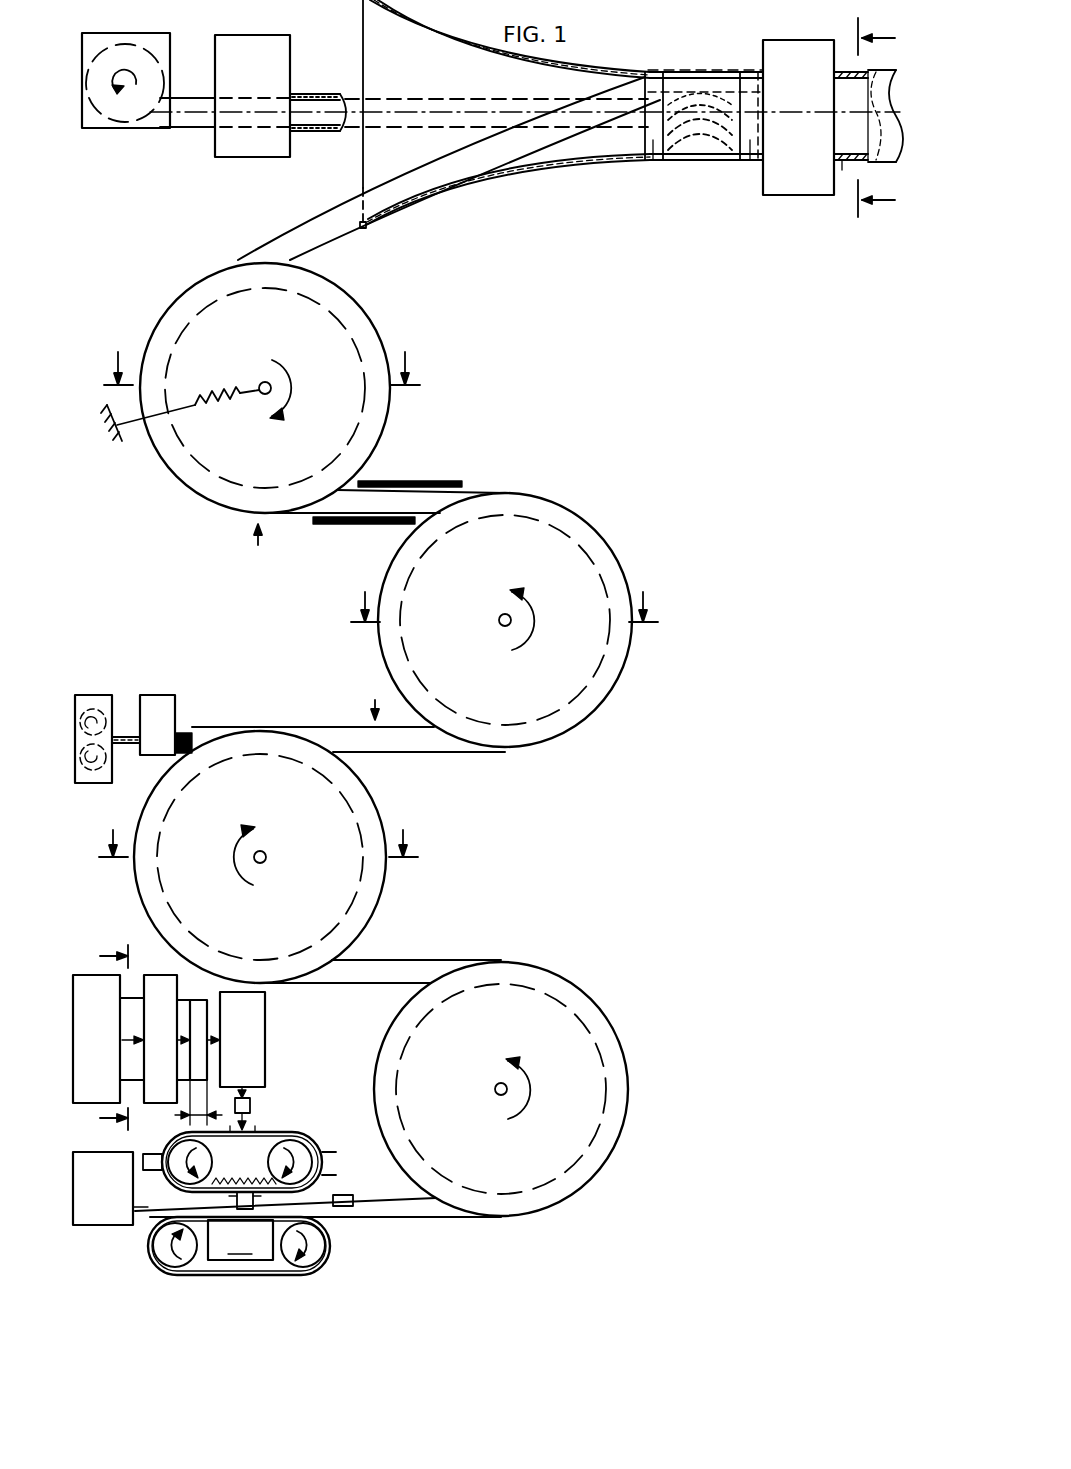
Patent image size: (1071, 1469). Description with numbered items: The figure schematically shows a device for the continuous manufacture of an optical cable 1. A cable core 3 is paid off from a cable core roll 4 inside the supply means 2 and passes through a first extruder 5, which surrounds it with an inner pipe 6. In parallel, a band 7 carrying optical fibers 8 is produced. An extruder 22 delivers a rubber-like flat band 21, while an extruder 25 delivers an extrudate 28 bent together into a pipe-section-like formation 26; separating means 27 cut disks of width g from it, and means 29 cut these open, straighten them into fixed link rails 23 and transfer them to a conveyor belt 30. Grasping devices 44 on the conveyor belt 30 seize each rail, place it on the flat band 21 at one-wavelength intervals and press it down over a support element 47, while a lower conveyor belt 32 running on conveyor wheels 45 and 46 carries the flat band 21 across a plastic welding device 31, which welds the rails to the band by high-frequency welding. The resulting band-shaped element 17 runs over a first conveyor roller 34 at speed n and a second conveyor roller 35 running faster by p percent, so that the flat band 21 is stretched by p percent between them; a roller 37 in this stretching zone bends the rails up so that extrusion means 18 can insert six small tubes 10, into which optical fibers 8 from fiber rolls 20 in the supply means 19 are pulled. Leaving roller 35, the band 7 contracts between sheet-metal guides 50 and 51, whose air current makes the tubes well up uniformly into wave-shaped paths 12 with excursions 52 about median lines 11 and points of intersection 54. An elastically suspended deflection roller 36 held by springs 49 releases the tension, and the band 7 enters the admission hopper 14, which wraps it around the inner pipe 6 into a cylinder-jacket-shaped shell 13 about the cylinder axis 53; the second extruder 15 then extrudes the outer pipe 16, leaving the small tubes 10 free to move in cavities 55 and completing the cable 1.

The cable 1 is at (868, 158).
The means for the continuous supply of a cable core 2 is at (98, 122).
The cable core 3 is at (190, 120).
The cable core roll 4 is at (125, 122).
The first extruder 5 is at (280, 68).
The inner pipe 6 is at (325, 133).
The band 7 is at (322, 240).
The optical fibers 8 is at (125, 760).
The small tubes 10 is at (184, 732).
The median lines 11 is at (651, 74).
The wave-shaped paths 12 is at (657, 102).
The cylinder-jacket-shaped shell 13 is at (683, 161).
The admission hopper 14 is at (430, 189).
The second extruder 15 is at (818, 52).
The outer pipe 16 is at (848, 73).
The band-shaped element 17 is at (384, 966).
The extrusion means 18 is at (152, 740).
The means for the continuous supply of the optical fibers 19 is at (106, 700).
The fiber rolls 20 is at (87, 704).
The rubber-like flat band 21 is at (152, 1215).
The extruder 22 is at (95, 1215).
The fixed link rails 23 is at (656, 152).
The extruder 25 is at (88, 1090).
The pipe-section-like formation 26 is at (200, 1016).
The separating means 27 is at (158, 992).
The extrudate 28 is at (132, 1063).
The means to cut open, straighten and convey 29 is at (245, 1063).
The conveyor belt 30 is at (310, 1140).
The plastic welding device 31 is at (240, 1240).
The conveyor belt 32 is at (325, 1245).
The first conveyor roller 34 is at (538, 1158).
The second conveyor roller 35 is at (560, 680).
The deflection roller 36 is at (215, 455).
The roller 37 is at (177, 884).
The grasping devices 44 is at (255, 1130).
The conveyor wheel 45 is at (170, 1262).
The conveyor wheel 46 is at (305, 1265).
The support element 47 is at (244, 1180).
The spring 49 is at (213, 396).
The sheet-metal guide 50 is at (375, 481).
The sheet-metal guide 51 is at (355, 524).
The excursions 52 is at (700, 76).
The cylinder axis 53 is at (648, 128).
The points of intersection 54 is at (683, 74).
The cavities 55 is at (730, 161).